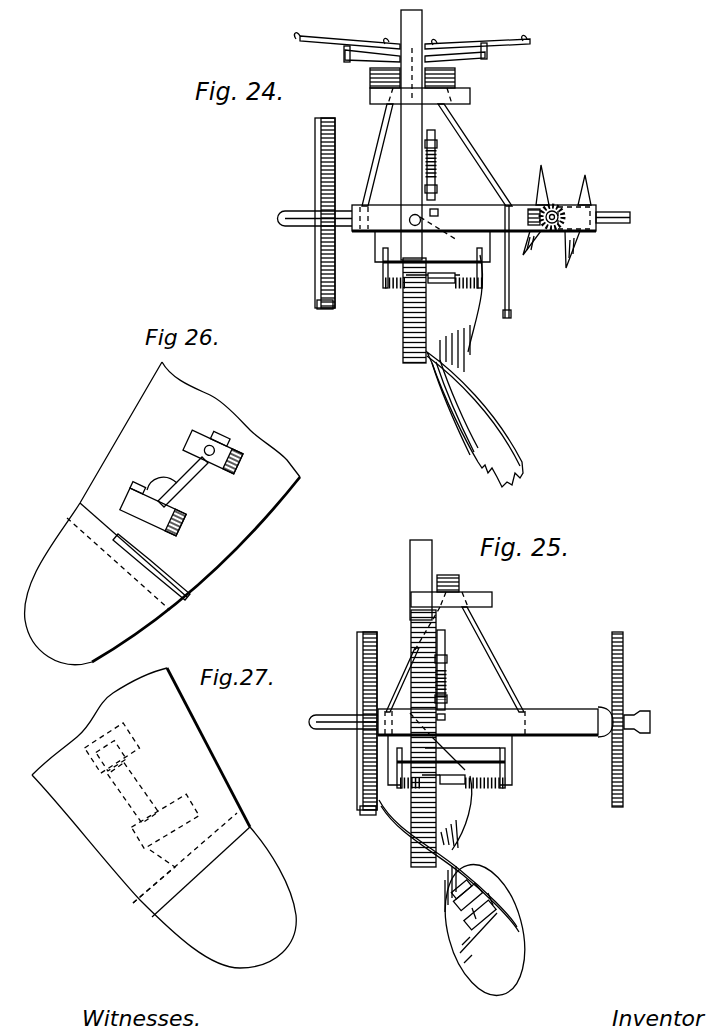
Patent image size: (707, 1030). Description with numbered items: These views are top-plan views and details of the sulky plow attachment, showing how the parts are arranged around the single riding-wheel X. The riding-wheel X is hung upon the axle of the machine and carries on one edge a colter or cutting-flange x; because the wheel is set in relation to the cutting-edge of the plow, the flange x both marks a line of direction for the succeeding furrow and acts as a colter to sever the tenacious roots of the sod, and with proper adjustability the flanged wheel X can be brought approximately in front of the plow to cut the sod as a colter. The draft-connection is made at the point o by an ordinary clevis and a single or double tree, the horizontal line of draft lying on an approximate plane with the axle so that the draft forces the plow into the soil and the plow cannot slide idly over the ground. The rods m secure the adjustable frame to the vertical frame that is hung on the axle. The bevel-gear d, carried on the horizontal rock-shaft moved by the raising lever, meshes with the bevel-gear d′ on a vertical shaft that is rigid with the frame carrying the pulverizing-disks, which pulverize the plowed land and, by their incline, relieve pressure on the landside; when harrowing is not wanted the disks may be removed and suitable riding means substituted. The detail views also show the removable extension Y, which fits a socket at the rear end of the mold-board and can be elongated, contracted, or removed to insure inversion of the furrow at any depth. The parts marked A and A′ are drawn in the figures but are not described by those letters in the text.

In FIG. 24, the standard / post with rack A is at (412, 186).
In FIG. 24, the shoe / furrow opener blade A′ is at (475, 419).
In FIG. 25, the shoe / furrow opener blade A′ is at (458, 899).
In FIG. 26, the shoe / furrow opener blade A′ is at (162, 513).
In FIG. 27, the shoe / furrow opener blade A′ is at (164, 818).
In FIG. 24, the riding-wheel X is at (310, 213).
In FIG. 25, the riding-wheel X is at (471, 721).
In FIG. 24, the cutting-flange x is at (324, 309).
In FIG. 25, the cutting-flange x is at (374, 815).
In FIG. 24, the rods m is at (432, 147).
In FIG. 25, the rods m is at (455, 652).
In FIG. 24, the draft-connection point o is at (412, 51).
In FIG. 24, the bevel-gear d is at (543, 230).
In FIG. 24, the bevel-gear d′ is at (563, 185).
In FIG. 26, the extension Y is at (127, 565).
In FIG. 27, the extension Y is at (191, 865).